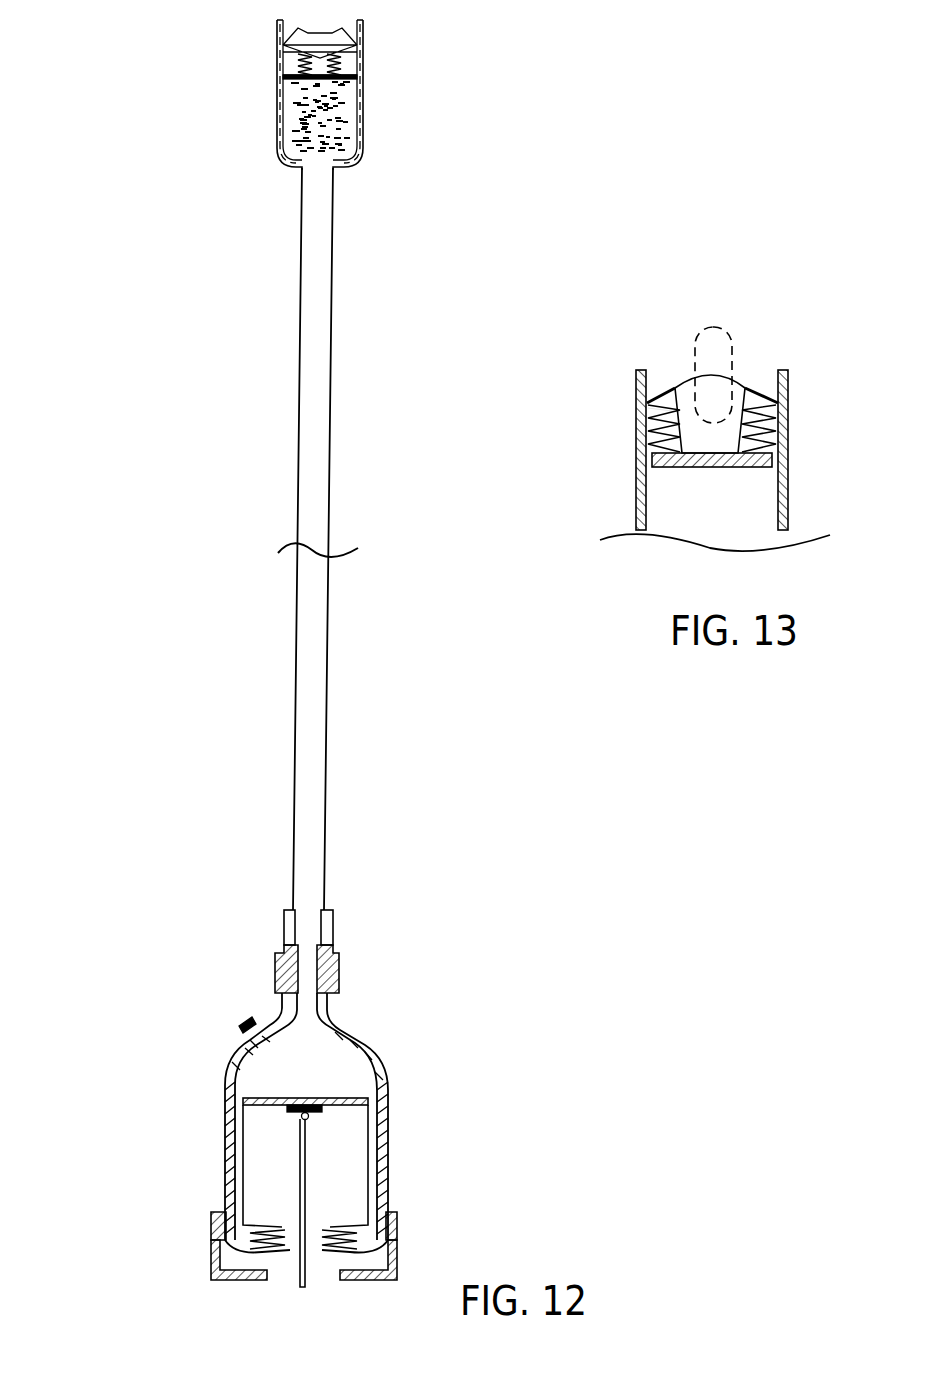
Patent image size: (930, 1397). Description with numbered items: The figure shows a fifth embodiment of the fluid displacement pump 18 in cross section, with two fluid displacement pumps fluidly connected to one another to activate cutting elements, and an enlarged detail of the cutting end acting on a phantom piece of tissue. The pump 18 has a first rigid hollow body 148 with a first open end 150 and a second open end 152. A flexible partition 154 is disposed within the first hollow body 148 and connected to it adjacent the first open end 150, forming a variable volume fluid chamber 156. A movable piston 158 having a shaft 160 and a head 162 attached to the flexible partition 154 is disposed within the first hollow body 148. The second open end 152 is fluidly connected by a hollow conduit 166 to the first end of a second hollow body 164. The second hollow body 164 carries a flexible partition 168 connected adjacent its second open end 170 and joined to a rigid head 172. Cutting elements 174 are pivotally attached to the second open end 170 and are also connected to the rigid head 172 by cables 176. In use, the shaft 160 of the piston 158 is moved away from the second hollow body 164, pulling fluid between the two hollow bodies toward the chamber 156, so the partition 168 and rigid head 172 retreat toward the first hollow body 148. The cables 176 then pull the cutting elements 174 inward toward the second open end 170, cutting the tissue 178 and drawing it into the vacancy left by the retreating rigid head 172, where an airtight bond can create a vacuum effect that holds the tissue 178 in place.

In FIG. 12, the fluid displacement pump 18 is at (66, 895).
In FIG. 12, the first rigid hollow body 148 is at (360, 1026).
In FIG. 12, the first open end 150 is at (258, 1252).
In FIG. 12, the second open end 152 is at (275, 978).
In FIG. 12, the flexible partition 154 is at (212, 1232).
In FIG. 12, the variable volume fluid chamber 156 is at (262, 1067).
In FIG. 12, the movable piston 158 is at (302, 1118).
In FIG. 12, the shaft 160 is at (299, 1195).
In FIG. 12, the head 162 is at (245, 1101).
In FIG. 12, the second hollow body 164 is at (364, 138).
In FIG. 13, the second hollow body 164 is at (653, 421).
In FIG. 12, the hollow conduit 166 is at (325, 790).
In FIG. 13, the flexible partition 168 is at (652, 404).
In FIG. 13, the second open end 170 is at (663, 502).
In FIG. 13, the rigid head 172 is at (650, 477).
In FIG. 13, the cutting elements 174 is at (787, 376).
In FIG. 13, the cables 176 is at (786, 420).
In FIG. 13, the tissue growth 178 is at (728, 335).